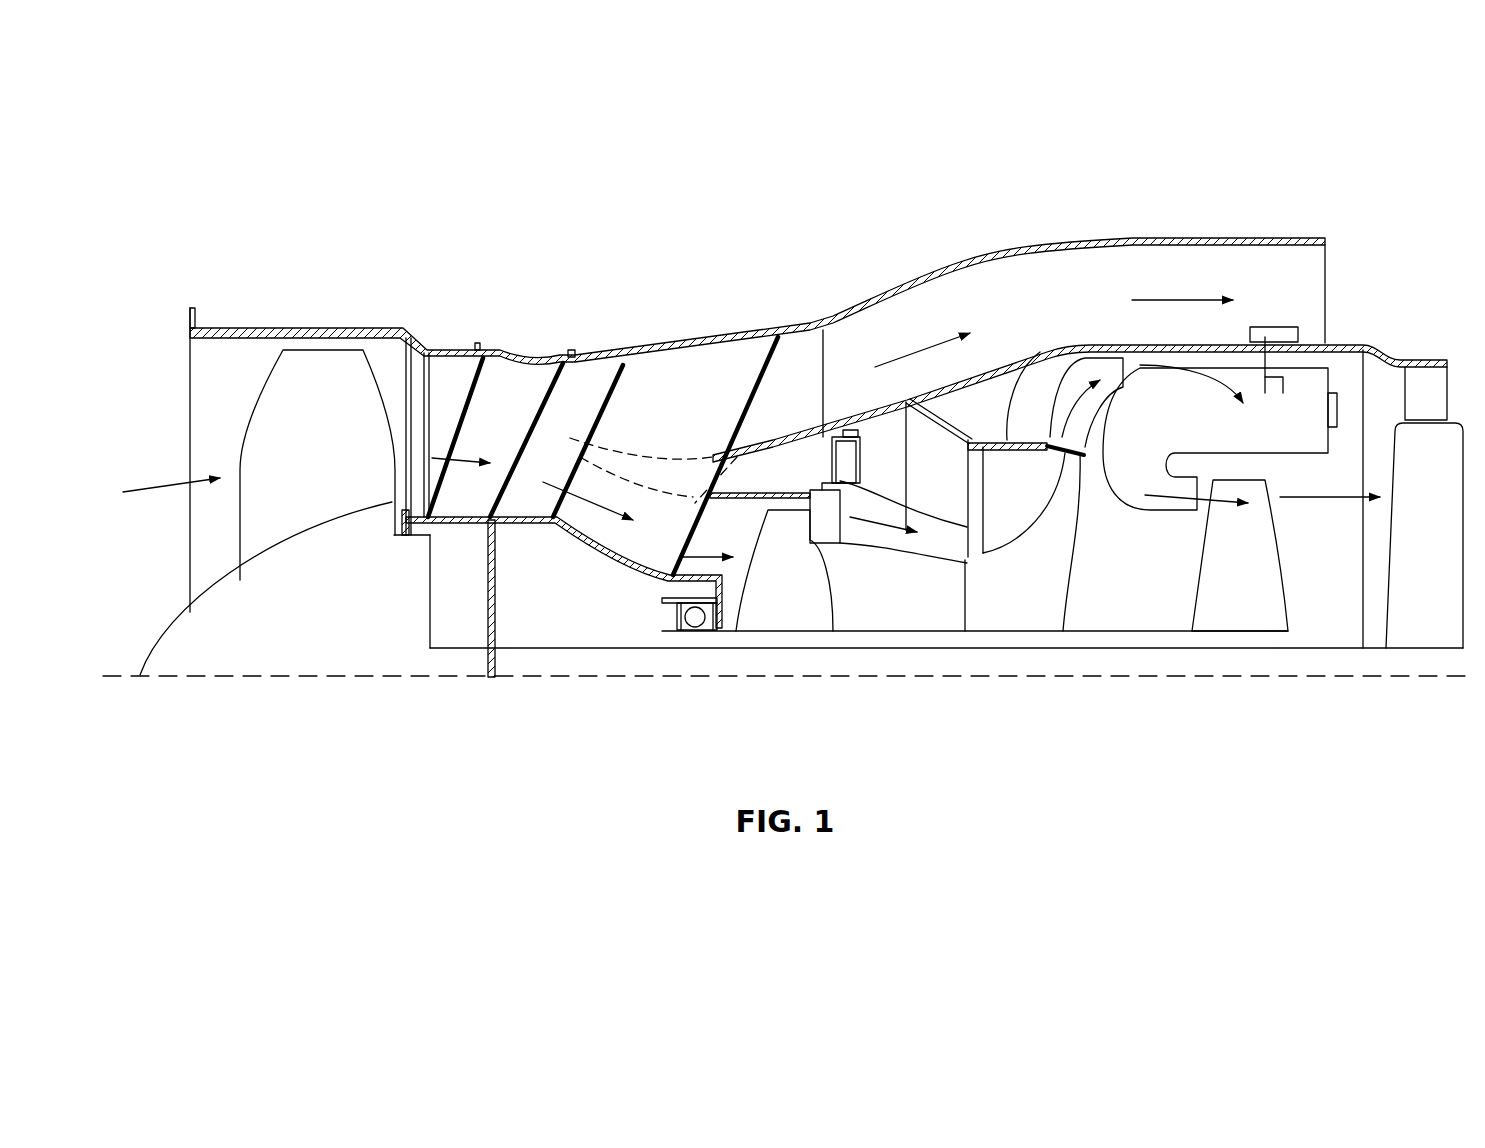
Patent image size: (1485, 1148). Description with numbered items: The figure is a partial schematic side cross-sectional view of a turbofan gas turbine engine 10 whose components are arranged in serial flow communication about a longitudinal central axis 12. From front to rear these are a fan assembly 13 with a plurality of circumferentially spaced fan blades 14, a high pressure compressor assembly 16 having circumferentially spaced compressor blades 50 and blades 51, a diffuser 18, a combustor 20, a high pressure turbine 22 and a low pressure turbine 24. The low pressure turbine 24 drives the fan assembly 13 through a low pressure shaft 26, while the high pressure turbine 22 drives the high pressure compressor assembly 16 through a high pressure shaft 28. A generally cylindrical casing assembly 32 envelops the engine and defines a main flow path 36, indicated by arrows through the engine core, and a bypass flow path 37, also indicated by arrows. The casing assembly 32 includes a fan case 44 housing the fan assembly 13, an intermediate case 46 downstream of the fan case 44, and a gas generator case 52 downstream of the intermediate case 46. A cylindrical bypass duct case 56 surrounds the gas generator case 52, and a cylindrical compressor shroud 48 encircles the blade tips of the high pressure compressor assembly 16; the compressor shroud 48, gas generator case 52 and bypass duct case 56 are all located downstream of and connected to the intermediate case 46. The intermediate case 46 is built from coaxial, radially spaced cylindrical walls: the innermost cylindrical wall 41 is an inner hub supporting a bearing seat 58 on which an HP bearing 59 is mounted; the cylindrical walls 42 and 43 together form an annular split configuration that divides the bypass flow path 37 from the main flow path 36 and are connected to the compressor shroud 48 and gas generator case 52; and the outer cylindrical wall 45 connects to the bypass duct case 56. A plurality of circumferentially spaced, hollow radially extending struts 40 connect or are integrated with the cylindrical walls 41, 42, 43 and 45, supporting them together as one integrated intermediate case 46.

The turbofan gas turbine engine 10 is at (265, 288).
The longitudinal central axis 12 is at (287, 680).
The fan assembly 13 is at (163, 644).
The fan blades 14 is at (303, 461).
The high pressure compressor assembly 16 is at (790, 621).
The diffuser 18 is at (1022, 416).
The combustor 20 is at (1167, 436).
The high pressure turbine 22 is at (1222, 589).
The low pressure turbine 24 is at (1413, 569).
The low pressure shaft 26 is at (1317, 648).
The high pressure shaft 28 is at (1100, 631).
The casing assembly 32 is at (567, 298).
The main flow path 36 is at (163, 487).
The bypass flow path 37 is at (915, 352).
The radially extending struts 40 is at (662, 419).
The cylindrical wall 41 is at (602, 553).
The cylindrical wall 42 is at (670, 494).
The cylindrical wall 43 is at (772, 437).
The fan case 44 is at (392, 334).
The cylindrical wall 45 is at (680, 347).
The intermediate case 46 is at (770, 330).
The compressor shroud 48 is at (792, 493).
The compressor blades 50 is at (770, 512).
The blades 51 is at (987, 553).
The gas generator case 52 is at (1100, 342).
The bypass duct case 56 is at (1273, 238).
The bearing seat 58 is at (733, 621).
The HP bearing 59 is at (667, 628).